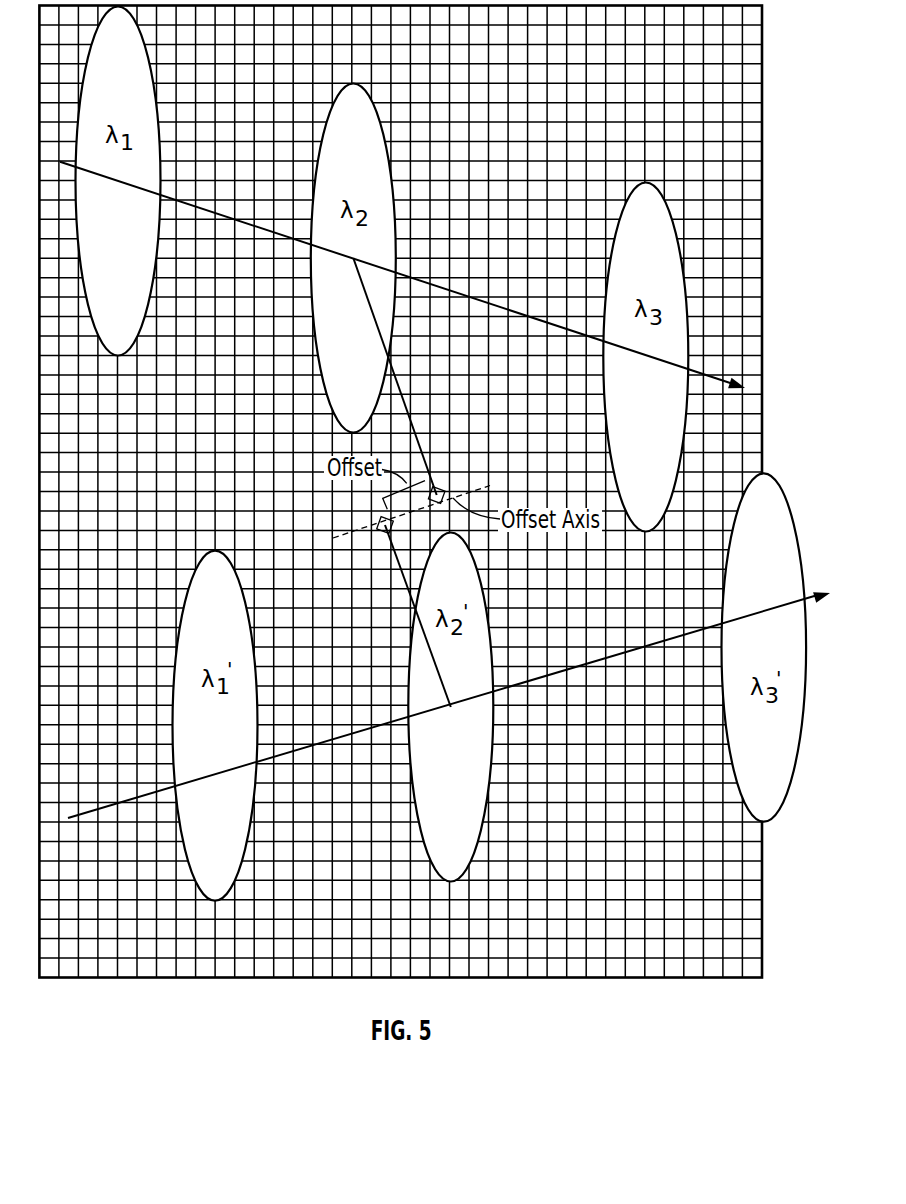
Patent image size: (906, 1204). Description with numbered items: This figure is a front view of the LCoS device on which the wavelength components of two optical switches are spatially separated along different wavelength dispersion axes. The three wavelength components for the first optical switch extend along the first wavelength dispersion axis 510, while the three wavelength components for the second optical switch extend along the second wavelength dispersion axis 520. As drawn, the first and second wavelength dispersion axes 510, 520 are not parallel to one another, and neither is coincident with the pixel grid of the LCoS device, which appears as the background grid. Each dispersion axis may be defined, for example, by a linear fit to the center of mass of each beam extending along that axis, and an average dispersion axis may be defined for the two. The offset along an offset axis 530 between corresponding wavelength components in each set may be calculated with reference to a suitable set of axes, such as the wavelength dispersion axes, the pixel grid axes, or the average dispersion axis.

The first wavelength dispersion axis 510 is at (498, 302).
The second wavelength dispersion axis 520 is at (600, 660).
The offset axis 530 is at (360, 528).